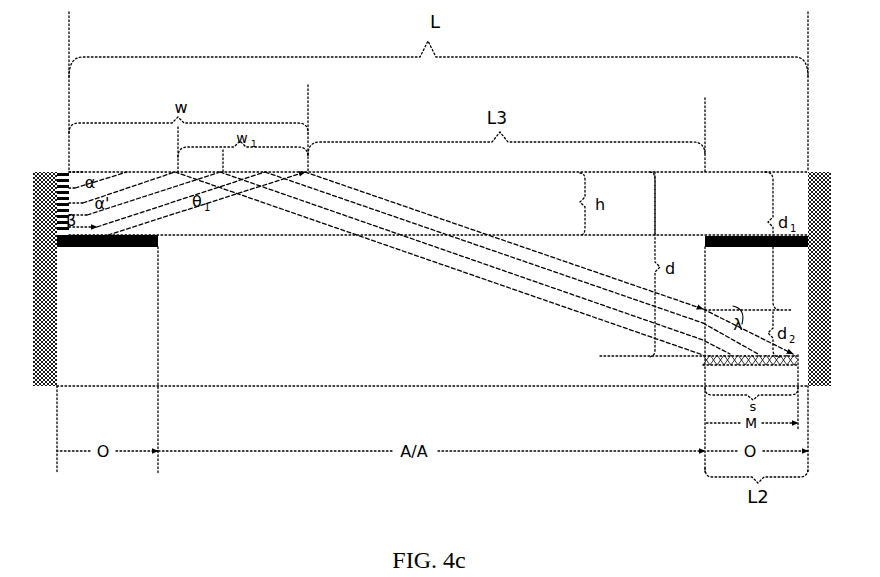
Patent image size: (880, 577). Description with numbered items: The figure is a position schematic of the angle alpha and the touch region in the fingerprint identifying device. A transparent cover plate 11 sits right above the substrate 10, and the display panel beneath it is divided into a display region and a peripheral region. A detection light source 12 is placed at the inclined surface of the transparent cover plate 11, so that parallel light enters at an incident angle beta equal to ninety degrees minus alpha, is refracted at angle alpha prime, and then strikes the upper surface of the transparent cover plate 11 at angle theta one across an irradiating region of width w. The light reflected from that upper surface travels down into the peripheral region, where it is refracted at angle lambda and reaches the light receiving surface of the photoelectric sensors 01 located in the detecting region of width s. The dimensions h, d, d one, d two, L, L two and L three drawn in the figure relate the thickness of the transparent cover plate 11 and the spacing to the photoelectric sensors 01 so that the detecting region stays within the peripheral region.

The substrate 10 is at (212, 343).
The transparent cover plate 11 is at (718, 203).
The detection light source 12 is at (108, 235).
The photoelectric sensors 01 is at (718, 367).